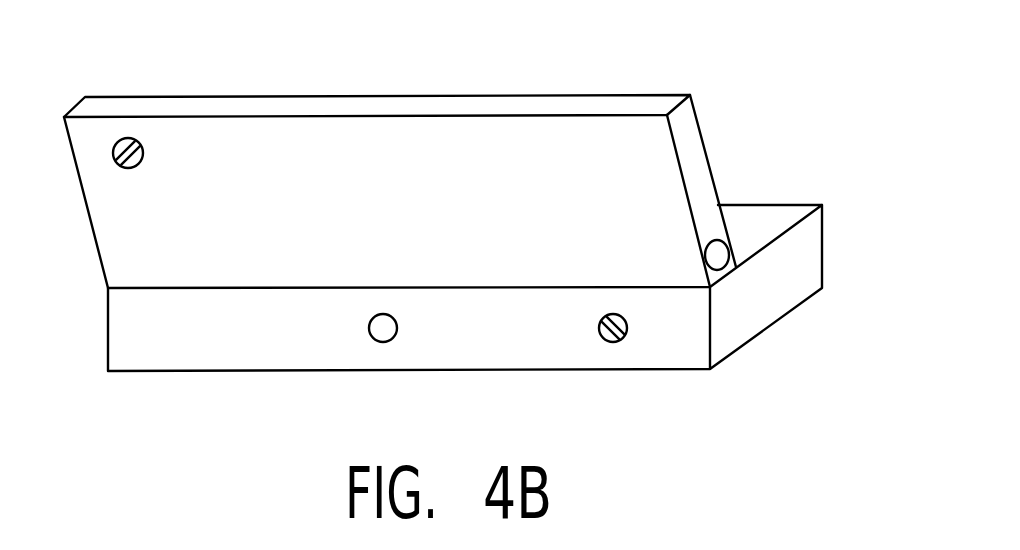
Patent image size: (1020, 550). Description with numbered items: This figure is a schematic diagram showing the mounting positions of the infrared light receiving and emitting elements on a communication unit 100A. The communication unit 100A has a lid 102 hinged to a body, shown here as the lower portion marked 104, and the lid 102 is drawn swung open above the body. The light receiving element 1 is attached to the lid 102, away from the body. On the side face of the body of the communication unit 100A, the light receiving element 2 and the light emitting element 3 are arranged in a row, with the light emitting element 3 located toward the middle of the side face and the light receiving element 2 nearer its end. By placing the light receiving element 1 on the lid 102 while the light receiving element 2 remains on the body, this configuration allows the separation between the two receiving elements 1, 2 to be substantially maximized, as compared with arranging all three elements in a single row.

The communication unit 100A is at (482, 213).
The lid 102 is at (400, 144).
The base 104 is at (497, 316).
The light receiving element 1 is at (137, 140).
The light receiving element 2 is at (607, 343).
The light emitting element 3 is at (380, 343).